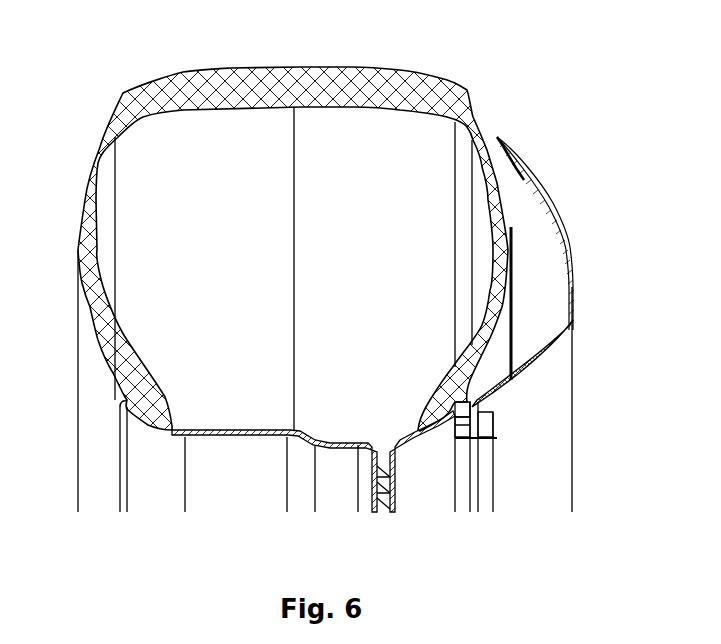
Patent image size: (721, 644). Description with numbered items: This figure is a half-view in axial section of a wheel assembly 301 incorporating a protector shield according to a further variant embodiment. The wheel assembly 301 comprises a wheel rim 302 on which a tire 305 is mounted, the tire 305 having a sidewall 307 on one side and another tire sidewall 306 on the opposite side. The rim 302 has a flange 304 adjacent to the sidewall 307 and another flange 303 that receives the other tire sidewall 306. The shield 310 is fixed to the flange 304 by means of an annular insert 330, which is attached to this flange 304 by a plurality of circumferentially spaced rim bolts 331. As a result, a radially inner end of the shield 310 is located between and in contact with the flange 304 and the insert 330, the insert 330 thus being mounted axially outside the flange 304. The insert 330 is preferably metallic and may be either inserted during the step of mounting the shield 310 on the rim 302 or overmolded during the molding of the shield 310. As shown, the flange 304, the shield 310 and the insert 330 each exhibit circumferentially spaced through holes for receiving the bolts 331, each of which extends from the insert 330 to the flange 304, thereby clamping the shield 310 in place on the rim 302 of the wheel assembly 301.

The wheel assembly 301 is at (258, 473).
The wheel rim 302 is at (257, 427).
The other flange 303 is at (122, 403).
The flange 304 is at (457, 428).
The tire 305 is at (180, 70).
The other tire sidewall 306 is at (80, 260).
The sidewall 307 is at (511, 230).
The shield 310 is at (567, 232).
The annular insert 330 is at (498, 402).
The rim bolts 331 is at (492, 430).